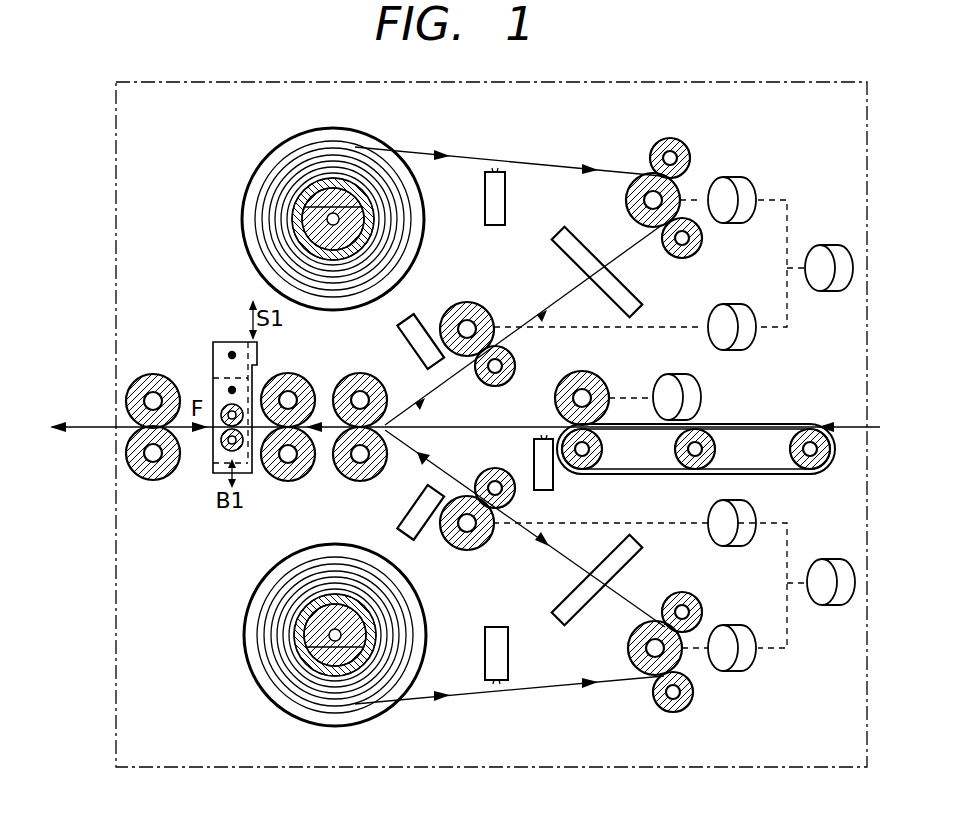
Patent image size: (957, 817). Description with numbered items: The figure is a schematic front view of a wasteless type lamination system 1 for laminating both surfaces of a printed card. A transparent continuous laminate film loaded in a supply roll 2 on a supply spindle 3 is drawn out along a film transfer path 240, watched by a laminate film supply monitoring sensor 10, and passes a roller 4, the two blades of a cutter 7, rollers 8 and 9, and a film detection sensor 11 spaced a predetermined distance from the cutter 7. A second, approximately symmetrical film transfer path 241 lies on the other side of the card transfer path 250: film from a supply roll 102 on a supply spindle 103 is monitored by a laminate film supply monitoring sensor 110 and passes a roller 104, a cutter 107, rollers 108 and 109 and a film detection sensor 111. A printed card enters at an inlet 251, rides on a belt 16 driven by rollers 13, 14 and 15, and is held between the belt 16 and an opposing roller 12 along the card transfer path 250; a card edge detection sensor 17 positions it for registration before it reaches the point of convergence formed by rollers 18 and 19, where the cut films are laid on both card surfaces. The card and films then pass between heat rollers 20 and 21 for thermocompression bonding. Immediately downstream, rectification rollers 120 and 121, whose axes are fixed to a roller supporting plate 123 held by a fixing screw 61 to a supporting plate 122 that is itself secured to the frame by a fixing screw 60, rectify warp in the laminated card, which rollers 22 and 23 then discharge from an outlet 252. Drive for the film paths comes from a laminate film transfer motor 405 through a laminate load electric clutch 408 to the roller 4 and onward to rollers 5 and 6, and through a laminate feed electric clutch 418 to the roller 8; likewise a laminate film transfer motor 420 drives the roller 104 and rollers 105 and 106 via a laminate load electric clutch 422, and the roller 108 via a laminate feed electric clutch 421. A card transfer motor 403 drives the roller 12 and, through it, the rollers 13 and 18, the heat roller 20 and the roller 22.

The wasteless type lamination system 1 is at (838, 82).
The supply roll 2 is at (325, 150).
The supply spindle 3 is at (261, 164).
The roller 4 is at (626, 200).
The roller 5 is at (688, 150).
The roller 6 is at (702, 240).
The cutter 7 is at (625, 300).
The roller 8 is at (462, 302).
The roller 9 is at (513, 358).
The laminate film supply monitoring sensor 10 is at (485, 197).
The film detection sensor 11 is at (420, 322).
The roller 12 is at (603, 380).
The roller 13 is at (575, 470).
The roller 14 is at (697, 470).
The roller 15 is at (826, 470).
The belt 16 is at (640, 475).
The card edge detection sensor 17 is at (534, 452).
The roller 18 is at (357, 374).
The roller 19 is at (366, 481).
The heat roller 20 is at (298, 376).
The heat roller 21 is at (296, 481).
The roller 22 is at (157, 376).
The roller 23 is at (153, 480).
The fixing screw 60 is at (232, 355).
The fixing screw 61 is at (232, 390).
The supply roll 102 is at (318, 715).
The supply spindle 103 is at (265, 693).
The roller 104 is at (628, 650).
The roller 105 is at (693, 698).
The roller 106 is at (702, 608).
The cutter 107 is at (628, 566).
The roller 108 is at (466, 550).
The roller 109 is at (486, 475).
The laminate film supply monitoring sensor 110 is at (500, 627).
The film detection sensor 111 is at (424, 532).
The rotatable roller 120 is at (213, 355).
The rotatable roller 121 is at (240, 448).
The supporting plate 122 is at (240, 342).
The roller supporting plate 123 is at (215, 470).
The film transfer path 240 is at (478, 158).
The film transfer path 241 is at (473, 694).
The card transfer path 250 is at (536, 424).
The inlet 251 is at (862, 422).
The outlet 252 is at (100, 424).
The card transfer motor 403 is at (716, 397).
The laminate film transfer motor 405 is at (840, 245).
The laminate load electric clutch 408 is at (750, 186).
The laminate feed electric clutch 418 is at (750, 338).
The laminate film transfer motor 420 is at (840, 605).
The laminate feed electric clutch 421 is at (752, 520).
The laminate load electric clutch 422 is at (752, 672).